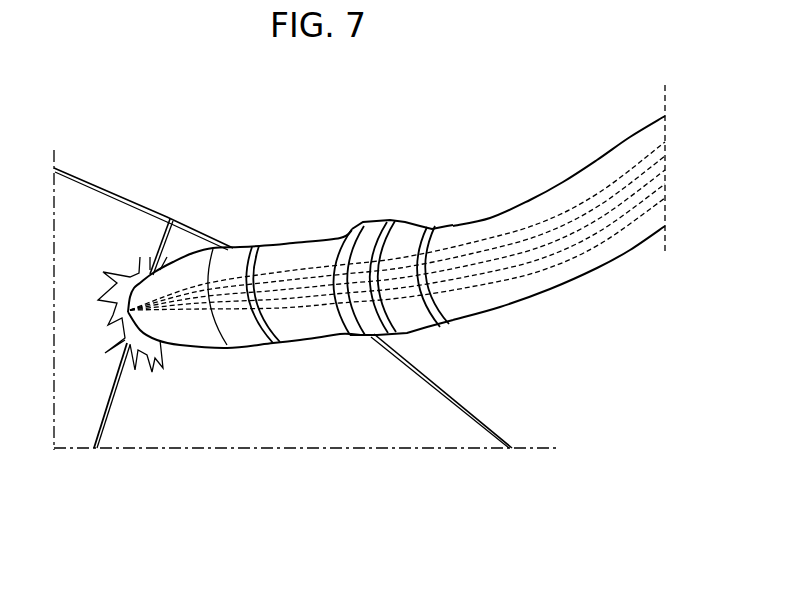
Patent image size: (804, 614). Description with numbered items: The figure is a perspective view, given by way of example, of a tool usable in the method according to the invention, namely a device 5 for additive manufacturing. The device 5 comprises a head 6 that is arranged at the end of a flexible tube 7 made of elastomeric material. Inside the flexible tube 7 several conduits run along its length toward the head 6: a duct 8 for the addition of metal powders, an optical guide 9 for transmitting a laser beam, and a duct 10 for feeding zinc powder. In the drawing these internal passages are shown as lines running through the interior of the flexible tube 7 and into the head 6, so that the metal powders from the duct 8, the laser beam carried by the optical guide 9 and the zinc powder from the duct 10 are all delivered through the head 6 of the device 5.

The device for additive manufacturing 5 is at (405, 202).
The head 6 is at (307, 229).
The flexible tube 7 is at (552, 280).
The duct for the addition of metal powders 8 is at (620, 174).
The optical guide 9 is at (667, 160).
The duct for feeding zinc powder 10 is at (612, 223).